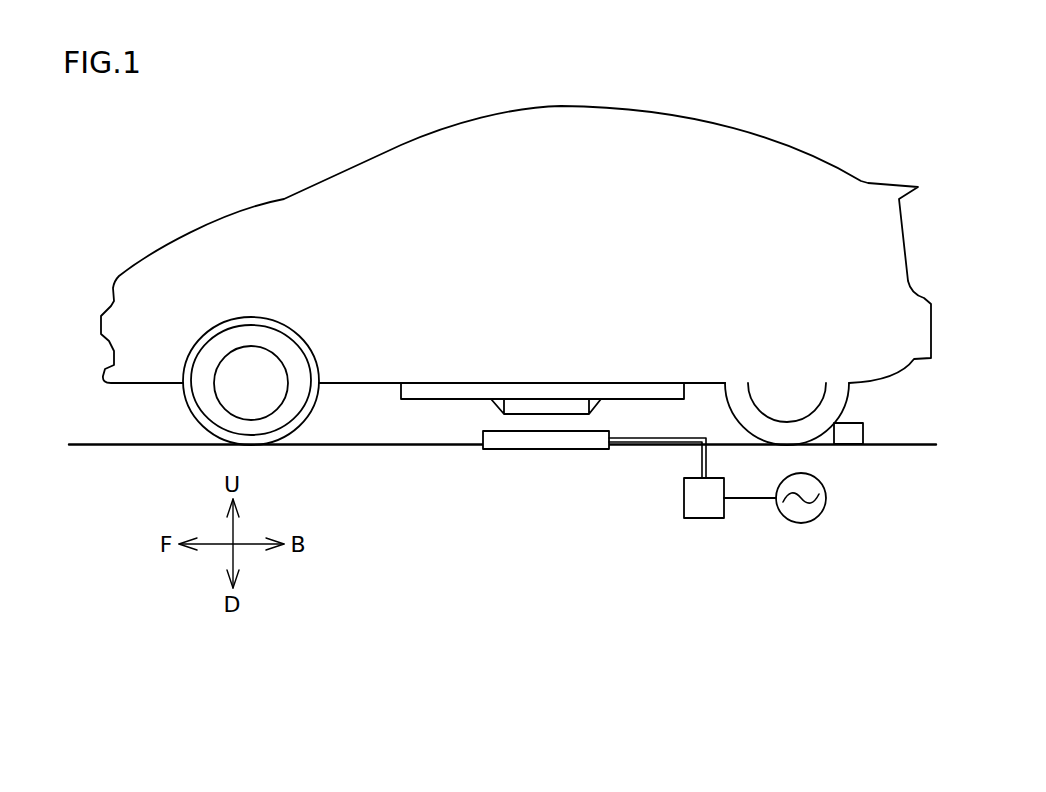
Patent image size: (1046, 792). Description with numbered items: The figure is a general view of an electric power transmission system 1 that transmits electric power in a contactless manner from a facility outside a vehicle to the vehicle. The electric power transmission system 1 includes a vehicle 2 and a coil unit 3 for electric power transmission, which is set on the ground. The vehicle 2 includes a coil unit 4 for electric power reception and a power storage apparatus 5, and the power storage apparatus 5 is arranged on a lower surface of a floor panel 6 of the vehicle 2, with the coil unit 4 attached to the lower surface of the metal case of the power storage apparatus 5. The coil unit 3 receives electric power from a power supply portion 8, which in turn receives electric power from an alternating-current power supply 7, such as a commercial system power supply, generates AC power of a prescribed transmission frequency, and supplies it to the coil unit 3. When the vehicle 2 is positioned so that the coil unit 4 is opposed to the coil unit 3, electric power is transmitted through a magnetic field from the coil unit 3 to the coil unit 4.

The electric power transmission system 1 is at (197, 95).
The vehicle 2 is at (560, 106).
The coil unit for electric power transmission 3 is at (528, 440).
The coil unit for electric power reception 4 is at (565, 407).
The power storage apparatus 5 is at (638, 388).
The floor panel 6 is at (353, 383).
The alternating-current power supply 7 is at (825, 497).
The power supply portion 8 is at (703, 517).